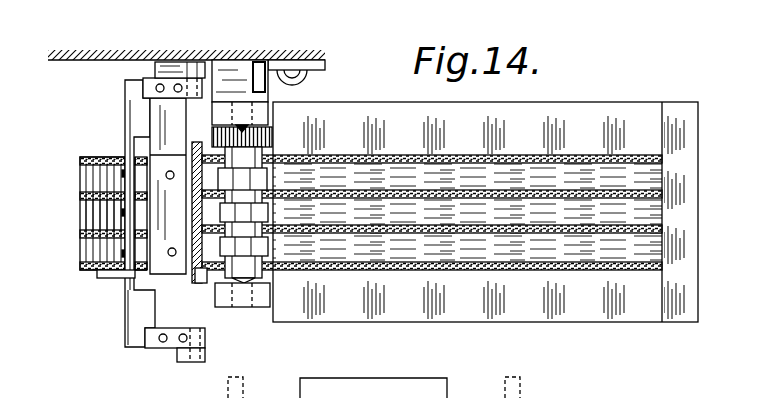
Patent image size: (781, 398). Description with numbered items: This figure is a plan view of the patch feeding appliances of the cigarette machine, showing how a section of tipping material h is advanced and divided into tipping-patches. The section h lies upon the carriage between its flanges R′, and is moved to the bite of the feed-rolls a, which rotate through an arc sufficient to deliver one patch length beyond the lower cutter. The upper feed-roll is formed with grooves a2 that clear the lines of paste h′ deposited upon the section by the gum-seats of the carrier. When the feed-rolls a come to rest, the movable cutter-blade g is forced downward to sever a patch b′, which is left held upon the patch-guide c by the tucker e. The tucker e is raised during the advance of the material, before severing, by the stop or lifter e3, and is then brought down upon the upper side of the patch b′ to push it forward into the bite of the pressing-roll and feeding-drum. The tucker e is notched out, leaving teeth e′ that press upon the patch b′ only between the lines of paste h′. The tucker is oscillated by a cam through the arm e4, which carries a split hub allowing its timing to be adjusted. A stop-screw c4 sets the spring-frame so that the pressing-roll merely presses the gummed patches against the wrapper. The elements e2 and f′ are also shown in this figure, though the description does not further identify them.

The arm e4 is at (217, 352).
The bracket plate e2 is at (147, 360).
The stop or lifter e3 is at (253, 78).
The tucker e is at (128, 165).
The patch b′ is at (82, 213).
The teeth e′ is at (122, 213).
The lines of paste h′ is at (412, 197).
The patch-guide c is at (113, 275).
The movable cutter-blade g is at (193, 280).
The bearing f′ is at (203, 287).
The stop-screw c4 is at (263, 306).
The feed-rolls a is at (265, 247).
The grooves a2 is at (263, 188).
The section of tipping material h is at (383, 247).
The flanges R′ is at (485, 212).